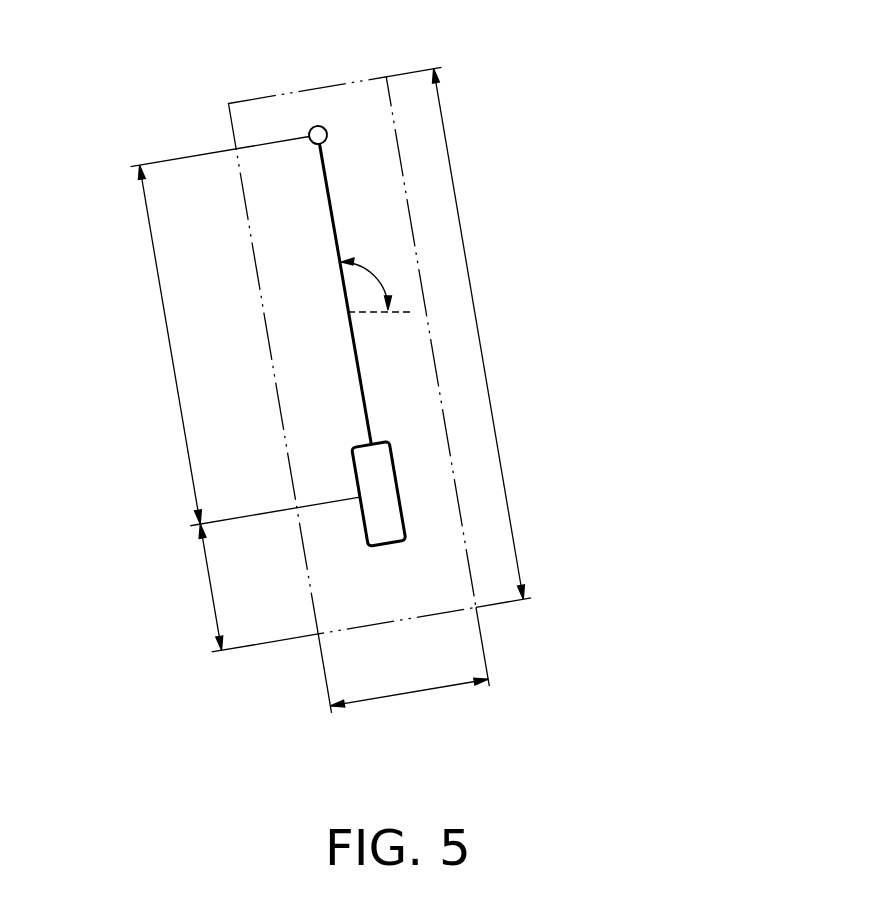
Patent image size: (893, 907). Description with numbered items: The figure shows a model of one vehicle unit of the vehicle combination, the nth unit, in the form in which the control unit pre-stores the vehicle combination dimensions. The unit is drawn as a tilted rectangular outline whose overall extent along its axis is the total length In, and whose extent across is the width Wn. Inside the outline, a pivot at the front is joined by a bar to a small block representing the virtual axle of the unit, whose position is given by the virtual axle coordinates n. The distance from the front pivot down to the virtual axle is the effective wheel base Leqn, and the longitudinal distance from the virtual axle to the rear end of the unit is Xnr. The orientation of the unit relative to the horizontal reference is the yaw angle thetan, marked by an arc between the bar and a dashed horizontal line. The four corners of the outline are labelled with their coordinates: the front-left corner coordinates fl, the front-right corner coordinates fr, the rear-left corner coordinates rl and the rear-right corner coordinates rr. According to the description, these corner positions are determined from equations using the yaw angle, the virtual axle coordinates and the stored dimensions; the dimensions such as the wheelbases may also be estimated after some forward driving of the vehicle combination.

The effective wheel base Leqn is at (153, 345).
The longitudinal distance from virtual axle to rear end Xnr is at (191, 587).
The total length In is at (478, 334).
The width Wn is at (409, 679).
The yaw angle thetan is at (377, 278).
The front-left corner coordinates fl is at (230, 103).
The front-right corner coordinates fr is at (385, 77).
The rear-left corner coordinates rl is at (317, 635).
The rear-right corner coordinates rr is at (477, 607).
The virtual axle coordinates n is at (378, 497).